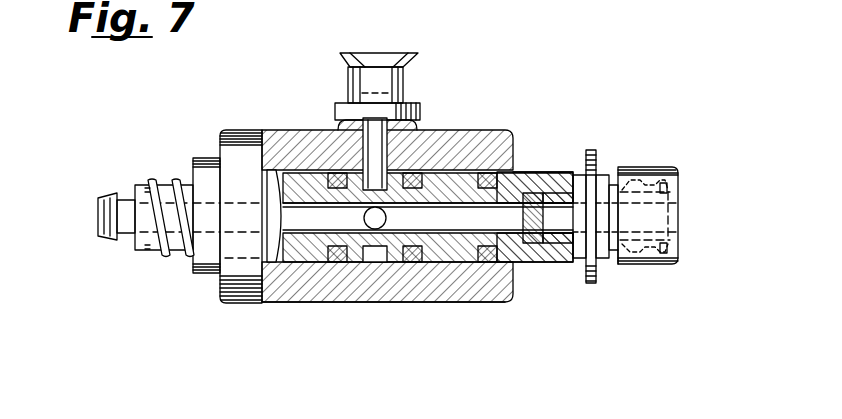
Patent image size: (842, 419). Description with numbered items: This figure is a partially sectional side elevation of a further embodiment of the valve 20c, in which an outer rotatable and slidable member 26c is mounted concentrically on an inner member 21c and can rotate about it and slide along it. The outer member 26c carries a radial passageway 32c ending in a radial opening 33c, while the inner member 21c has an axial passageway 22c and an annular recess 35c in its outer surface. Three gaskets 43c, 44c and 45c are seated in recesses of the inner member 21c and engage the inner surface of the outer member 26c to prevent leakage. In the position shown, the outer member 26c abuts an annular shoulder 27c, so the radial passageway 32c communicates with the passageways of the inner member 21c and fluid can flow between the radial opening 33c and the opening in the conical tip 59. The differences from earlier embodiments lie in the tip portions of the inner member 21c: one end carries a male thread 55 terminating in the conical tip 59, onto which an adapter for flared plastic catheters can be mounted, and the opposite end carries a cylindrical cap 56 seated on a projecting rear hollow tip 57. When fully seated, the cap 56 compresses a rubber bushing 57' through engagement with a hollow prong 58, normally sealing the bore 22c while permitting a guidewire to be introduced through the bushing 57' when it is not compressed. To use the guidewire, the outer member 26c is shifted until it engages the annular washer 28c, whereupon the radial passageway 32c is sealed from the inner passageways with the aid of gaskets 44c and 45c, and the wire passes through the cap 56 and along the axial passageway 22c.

The valve 20c is at (498, 110).
The inner member 21c is at (432, 183).
The axial passageway 22c is at (327, 222).
The outer rotatable and slidable member 26c is at (514, 132).
The annular shoulder 27c is at (212, 165).
The annular washer 28c is at (596, 156).
The radial passageway 32c is at (382, 145).
The radial opening 33c is at (363, 83).
The annular recess 35c is at (345, 300).
The gasket 43c is at (223, 146).
The gasket 44c is at (412, 262).
The gasket 45c is at (487, 255).
The male thread 55 is at (155, 180).
The cylindrical cap 56 is at (678, 168).
The projecting rear hollow tip 57 is at (651, 276).
The rubber bushing 57' is at (545, 273).
The hollow prong 58 is at (563, 244).
The conical tip 59 is at (120, 213).